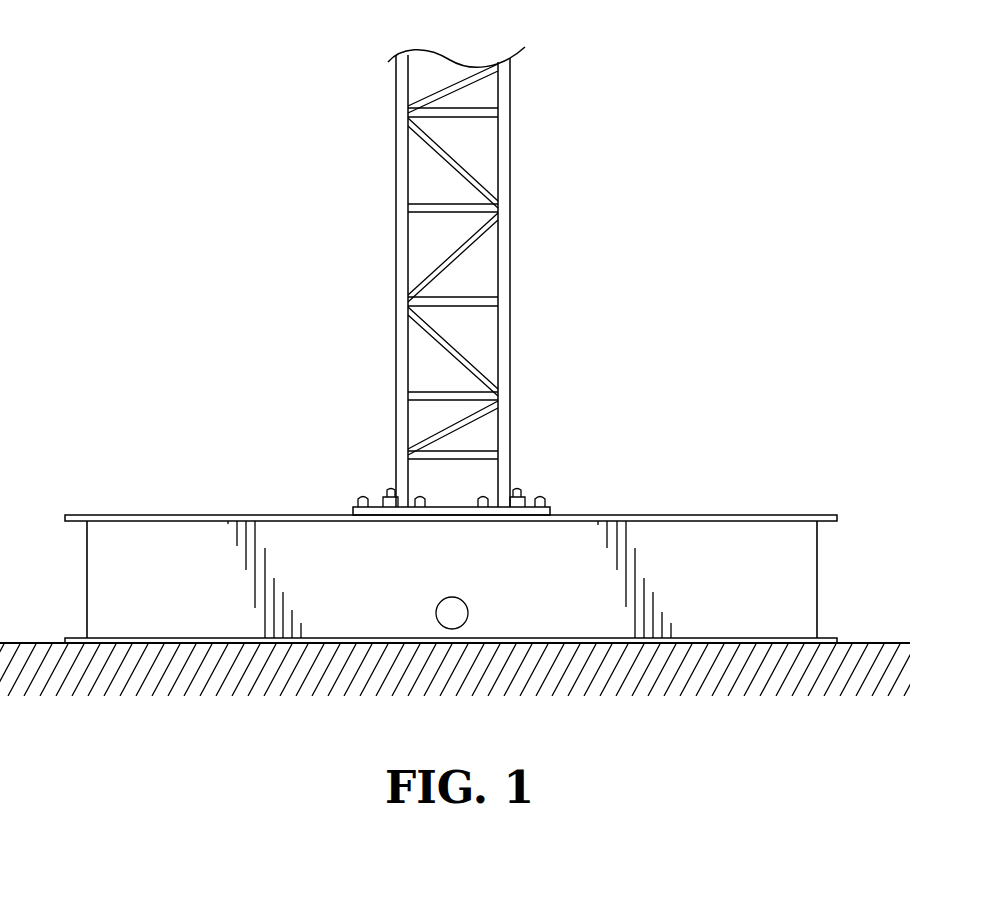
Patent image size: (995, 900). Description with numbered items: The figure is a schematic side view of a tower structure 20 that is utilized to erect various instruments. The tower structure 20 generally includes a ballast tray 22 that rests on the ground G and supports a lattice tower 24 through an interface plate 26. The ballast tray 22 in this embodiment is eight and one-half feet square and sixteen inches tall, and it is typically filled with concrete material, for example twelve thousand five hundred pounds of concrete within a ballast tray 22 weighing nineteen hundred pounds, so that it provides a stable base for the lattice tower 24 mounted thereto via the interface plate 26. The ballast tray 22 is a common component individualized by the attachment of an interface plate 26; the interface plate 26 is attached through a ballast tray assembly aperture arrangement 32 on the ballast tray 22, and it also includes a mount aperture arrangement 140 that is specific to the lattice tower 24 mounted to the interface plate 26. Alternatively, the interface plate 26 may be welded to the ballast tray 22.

The tower structure 20 is at (649, 116).
The ballast tray 22 is at (770, 506).
The lattice tower 24 is at (534, 347).
The interface plate 26 is at (552, 470).
The ballast tray assembly aperture arrangement 32 is at (550, 503).
The mount aperture arrangement 140 is at (517, 491).
The ground G is at (882, 642).